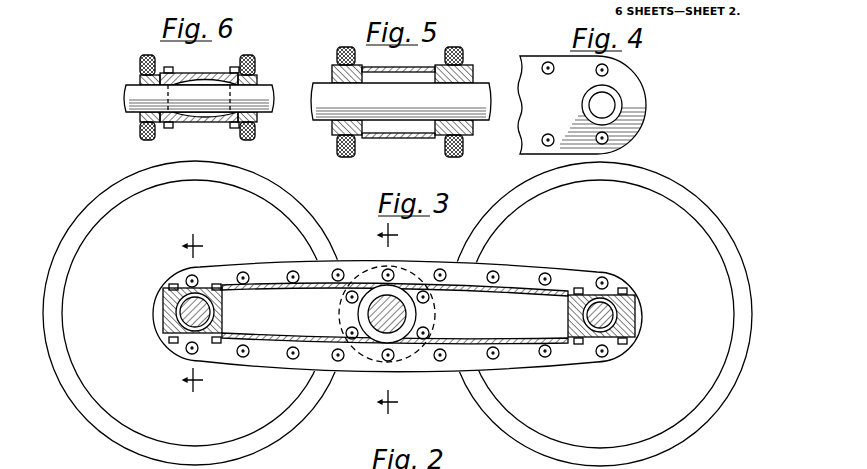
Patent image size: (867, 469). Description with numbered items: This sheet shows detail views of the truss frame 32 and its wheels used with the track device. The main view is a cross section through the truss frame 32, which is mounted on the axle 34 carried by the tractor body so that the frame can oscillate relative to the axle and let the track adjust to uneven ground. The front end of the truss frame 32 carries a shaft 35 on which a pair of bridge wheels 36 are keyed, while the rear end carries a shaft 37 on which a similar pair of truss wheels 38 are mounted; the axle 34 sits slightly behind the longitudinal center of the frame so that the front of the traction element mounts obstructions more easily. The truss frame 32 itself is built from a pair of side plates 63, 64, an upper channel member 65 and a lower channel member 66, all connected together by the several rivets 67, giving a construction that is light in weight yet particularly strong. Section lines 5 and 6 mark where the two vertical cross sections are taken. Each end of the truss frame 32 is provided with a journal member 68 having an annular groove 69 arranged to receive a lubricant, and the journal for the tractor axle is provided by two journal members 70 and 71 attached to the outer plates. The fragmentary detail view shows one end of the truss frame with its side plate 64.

In FIG. 3, the section line 5— 5 is at (388, 319).
In FIG. 3, the section line 6— 6 is at (193, 314).
In FIG. 3, the truss frame 32 is at (587, 287).
In FIG. 3, the axle 34 is at (380, 332).
In FIG. 3, the shaft 35 is at (640, 313).
In FIG. 3, the bridge wheels 36 is at (738, 342).
In FIG. 3, the shaft 37 is at (185, 312).
In FIG. 3, the truss wheels 38 is at (182, 450).
In FIG. 3, the side plate 63 is at (533, 307).
In FIG. 5, the side plate 63 is at (455, 46).
In FIG. 4, the side plate 64 is at (648, 100).
In FIG. 5, the side plate 64 is at (348, 46).
In FIG. 3, the upper channel member 65 is at (420, 284).
In FIG. 5, the upper channel member 65 is at (410, 68).
In FIG. 6, the upper channel member 65 is at (180, 72).
In FIG. 3, the lower channel member 66 is at (530, 349).
In FIG. 5, the lower channel member 66 is at (402, 139).
In FIG. 6, the lower channel member 66 is at (207, 123).
In FIG. 3, the rivets 67 is at (601, 358).
In FIG. 5, the rivets 67 is at (464, 150).
In FIG. 6, the journal member 68 is at (256, 80).
In FIG. 6, the annular groove 69 is at (205, 79).
In FIG. 5, the journal member 70 is at (334, 70).
In FIG. 5, the journal member 71 is at (470, 72).